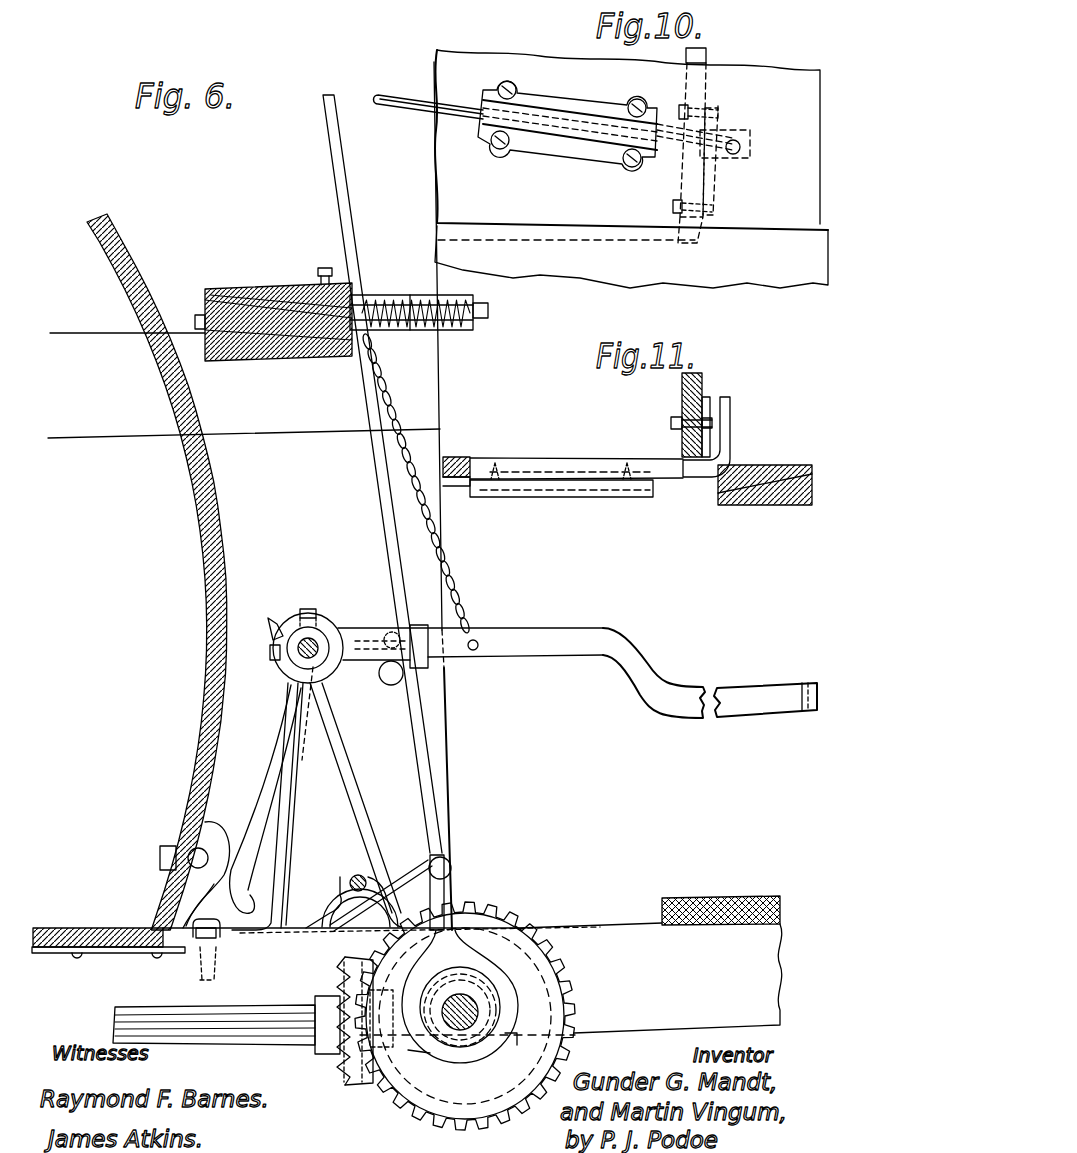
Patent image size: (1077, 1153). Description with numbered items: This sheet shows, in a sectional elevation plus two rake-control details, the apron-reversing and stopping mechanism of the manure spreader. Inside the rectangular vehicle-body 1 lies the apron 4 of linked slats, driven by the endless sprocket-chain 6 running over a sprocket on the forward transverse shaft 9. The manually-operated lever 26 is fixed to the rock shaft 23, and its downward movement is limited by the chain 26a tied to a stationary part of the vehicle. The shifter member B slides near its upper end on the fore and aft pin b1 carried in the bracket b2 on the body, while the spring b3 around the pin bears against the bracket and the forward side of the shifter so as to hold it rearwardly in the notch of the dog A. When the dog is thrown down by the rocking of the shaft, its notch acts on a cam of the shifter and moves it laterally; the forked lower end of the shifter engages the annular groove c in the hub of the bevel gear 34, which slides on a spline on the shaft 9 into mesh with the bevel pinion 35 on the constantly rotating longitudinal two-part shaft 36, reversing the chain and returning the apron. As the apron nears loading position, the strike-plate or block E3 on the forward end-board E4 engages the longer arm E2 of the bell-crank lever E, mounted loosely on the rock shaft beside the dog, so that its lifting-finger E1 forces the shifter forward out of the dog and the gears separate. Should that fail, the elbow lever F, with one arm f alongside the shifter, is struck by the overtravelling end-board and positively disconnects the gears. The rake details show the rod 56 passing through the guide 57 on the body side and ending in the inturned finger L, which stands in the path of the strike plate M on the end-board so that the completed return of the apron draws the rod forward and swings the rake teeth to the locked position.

In FIG. 6, the vehicle-body 1 is at (119, 637).
In FIG. 10, the vehicle-body 1 is at (788, 72).
In FIG. 11, the vehicle-body 1 is at (743, 503).
In FIG. 6, the apron 4 is at (73, 913).
In FIG. 10, the apron 4 is at (608, 234).
In FIG. 6, the endless sprocket-chain 6 is at (120, 950).
In FIG. 6, the forward transverse shaft 9 is at (457, 1034).
In FIG. 6, the rock shaft 23 is at (316, 640).
In FIG. 6, the manually-operated lever 26 is at (640, 665).
In FIG. 6, the chain 26a is at (450, 558).
In FIG. 6, the bevel gear 34 is at (415, 1100).
In FIG. 6, the bevel pinion 35 is at (340, 1055).
In FIG. 6, the longitudinal two-part shaft 36 is at (147, 1020).
In FIG. 10, the rod 56 is at (415, 108).
In FIG. 11, the rod 56 is at (466, 457).
In FIG. 10, the guide 57 is at (561, 143).
In FIG. 11, the guide 57 is at (575, 496).
In FIG. 6, the dog A is at (410, 628).
In FIG. 6, the shifter member B is at (383, 492).
In FIG. 6, the bell-crank lever E is at (296, 672).
In FIG. 6, the lifting-finger E1 is at (389, 686).
In FIG. 6, the longer arm E2 is at (262, 782).
In FIG. 6, the strike-plate or block E3 is at (205, 832).
In FIG. 6, the end-board E4 is at (213, 488).
In FIG. 10, the end-board E4 is at (708, 62).
In FIG. 11, the end-board E4 is at (682, 394).
In FIG. 6, the elbow lever F is at (307, 925).
In FIG. 10, the finger L is at (747, 130).
In FIG. 11, the finger L is at (732, 423).
In FIG. 10, the strike plate M is at (718, 174).
In FIG. 11, the strike plate M is at (710, 397).
In FIG. 6, the fore and aft pin b1 is at (488, 312).
In FIG. 6, the bracket b2 is at (461, 322).
In FIG. 6, the spring b3 is at (387, 306).
In FIG. 6, the annular groove c is at (490, 1000).
In FIG. 6, the arm f is at (445, 850).